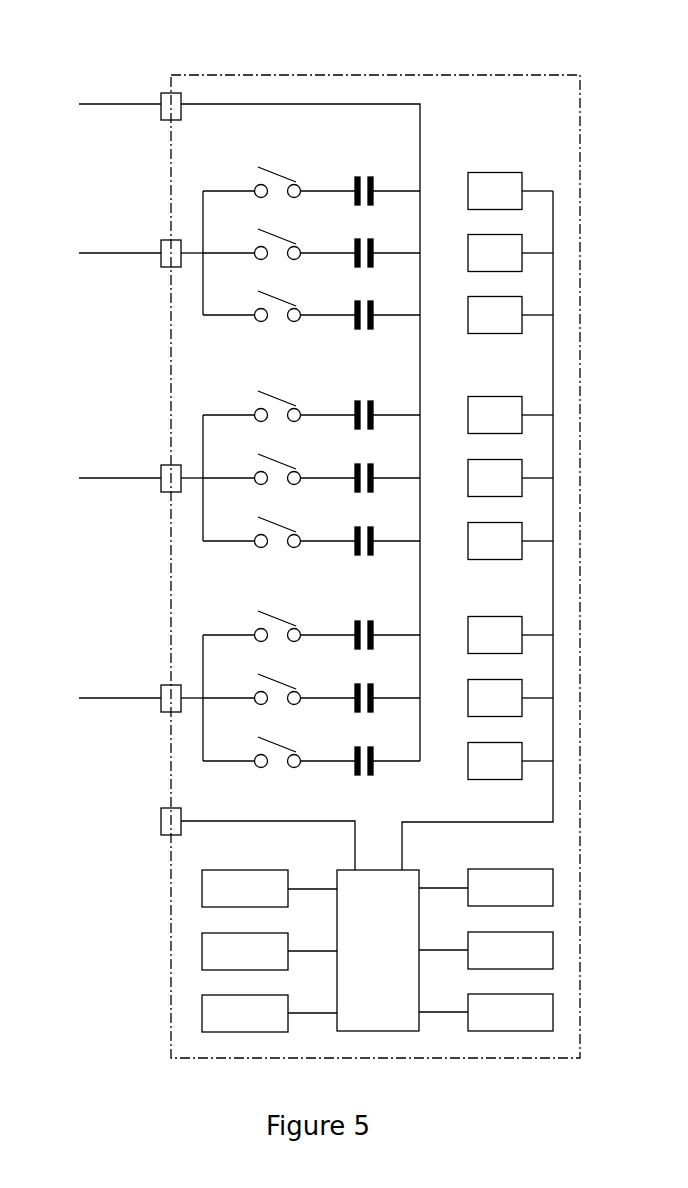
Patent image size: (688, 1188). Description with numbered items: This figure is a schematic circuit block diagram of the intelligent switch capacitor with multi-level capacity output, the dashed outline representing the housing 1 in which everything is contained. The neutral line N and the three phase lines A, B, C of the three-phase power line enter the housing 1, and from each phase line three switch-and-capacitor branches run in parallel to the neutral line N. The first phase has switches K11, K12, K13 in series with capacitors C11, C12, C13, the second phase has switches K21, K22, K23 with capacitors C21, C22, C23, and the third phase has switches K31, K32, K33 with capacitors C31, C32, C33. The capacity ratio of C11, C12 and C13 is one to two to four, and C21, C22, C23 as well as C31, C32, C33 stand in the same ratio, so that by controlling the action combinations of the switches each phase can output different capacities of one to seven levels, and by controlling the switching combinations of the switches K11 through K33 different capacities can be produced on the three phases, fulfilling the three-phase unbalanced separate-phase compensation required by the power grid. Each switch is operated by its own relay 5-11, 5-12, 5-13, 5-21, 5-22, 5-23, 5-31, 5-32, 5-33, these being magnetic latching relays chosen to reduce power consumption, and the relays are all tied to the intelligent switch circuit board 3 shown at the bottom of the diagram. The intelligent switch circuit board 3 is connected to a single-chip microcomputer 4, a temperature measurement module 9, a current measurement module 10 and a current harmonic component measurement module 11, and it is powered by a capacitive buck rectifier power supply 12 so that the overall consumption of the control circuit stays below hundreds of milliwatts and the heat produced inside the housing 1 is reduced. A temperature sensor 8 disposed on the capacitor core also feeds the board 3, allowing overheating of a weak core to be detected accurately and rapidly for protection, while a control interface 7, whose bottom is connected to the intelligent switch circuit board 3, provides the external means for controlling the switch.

The housing 1 is at (339, 566).
The intelligent switch circuit board 3 is at (378, 950).
The single-chip microcomputer 4 is at (269, 951).
The control interface 7 is at (247, 839).
The temperature sensor 8 is at (269, 1013).
The temperature measurement module 9 is at (486, 887).
The current measurement module 10 is at (486, 950).
The current harmonic component measurement module 11 is at (486, 1012).
The capacitive buck rectifier power supply 12 is at (269, 888).
The relay 5-11 is at (510, 191).
The relay 5-12 is at (510, 253).
The relay 5-13 is at (510, 315).
The relay 5-21 is at (510, 415).
The relay 5-22 is at (510, 478).
The relay 5-23 is at (510, 541).
The relay 5-31 is at (510, 635).
The relay 5-32 is at (510, 698).
The relay 5-33 is at (510, 761).
The switch K11 is at (261, 174).
The switch K12 is at (261, 236).
The switch K13 is at (261, 298).
The switch K21 is at (261, 398).
The switch K22 is at (261, 461).
The switch K23 is at (261, 524).
The switch K31 is at (261, 618).
The switch K32 is at (261, 681).
The switch K33 is at (261, 744).
The capacitor C11 is at (361, 178).
The capacitor C12 is at (361, 240).
The capacitor C13 is at (361, 302).
The capacitor C21 is at (361, 402).
The capacitor C22 is at (361, 465).
The capacitor C23 is at (361, 528).
The capacitor C31 is at (361, 622).
The capacitor C32 is at (361, 685).
The capacitor C33 is at (361, 748).
The neutral line N is at (233, 425).
The phase A line A is at (125, 253).
The phase B line B is at (125, 478).
The phase C line C is at (125, 698).